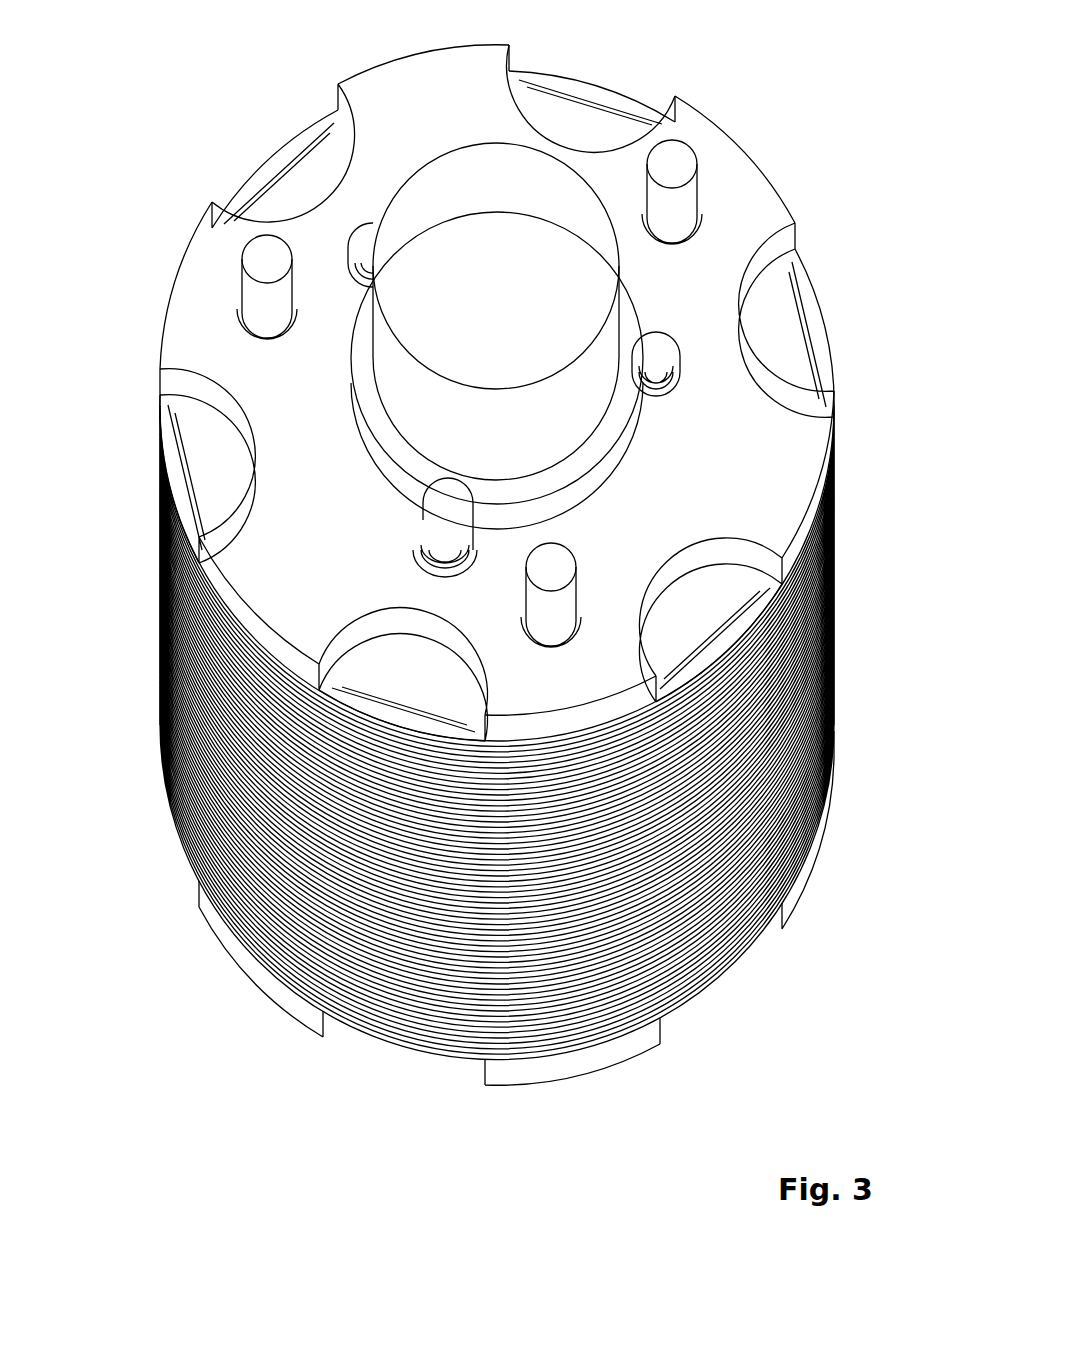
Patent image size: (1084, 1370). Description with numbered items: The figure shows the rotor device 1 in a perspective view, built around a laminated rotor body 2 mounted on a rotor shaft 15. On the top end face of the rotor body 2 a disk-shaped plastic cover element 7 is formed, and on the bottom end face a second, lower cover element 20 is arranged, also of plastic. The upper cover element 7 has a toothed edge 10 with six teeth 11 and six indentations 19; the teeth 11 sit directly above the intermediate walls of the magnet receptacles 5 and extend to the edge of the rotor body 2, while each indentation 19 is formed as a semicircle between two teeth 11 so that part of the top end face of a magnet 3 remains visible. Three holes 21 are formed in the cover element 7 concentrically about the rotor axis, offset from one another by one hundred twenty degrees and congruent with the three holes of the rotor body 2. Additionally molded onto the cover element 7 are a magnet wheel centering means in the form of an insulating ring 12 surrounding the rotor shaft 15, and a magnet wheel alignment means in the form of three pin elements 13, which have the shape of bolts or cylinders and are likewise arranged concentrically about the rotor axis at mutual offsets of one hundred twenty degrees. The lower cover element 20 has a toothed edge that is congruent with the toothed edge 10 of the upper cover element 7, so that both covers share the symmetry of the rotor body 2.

The rotor device 1 is at (245, 1065).
The rotor body 2 is at (426, 1023).
The magnet 3 is at (575, 140).
The magnet receptacle 5 is at (543, 97).
The cover element 7 is at (342, 525).
The toothed edge 10 is at (750, 110).
The tooth 11 is at (760, 197).
The insulating ring 12 is at (372, 405).
The pin element 13 is at (255, 272).
The rotor shaft 15 is at (606, 266).
The indentation 19 is at (780, 246).
The lower cover element 20 is at (494, 1089).
The hole 21 is at (658, 392).